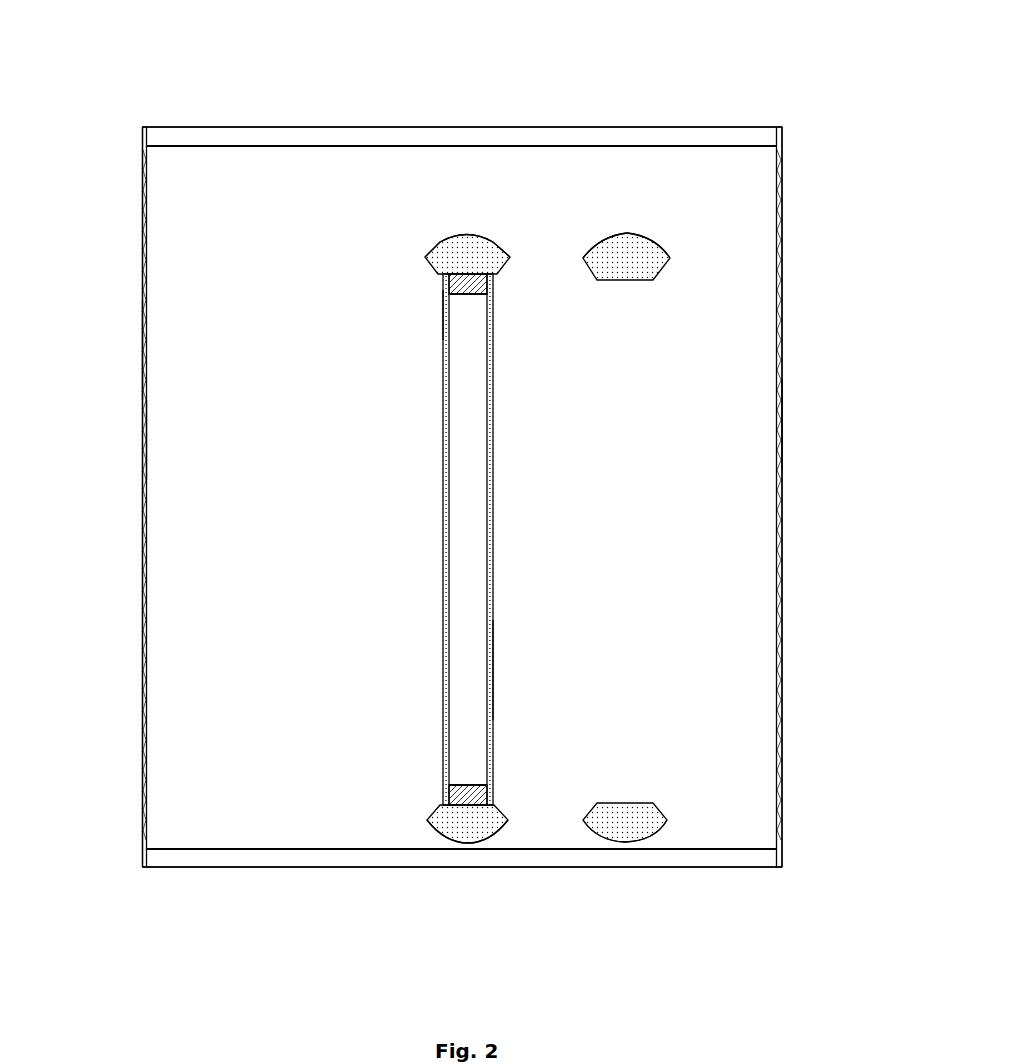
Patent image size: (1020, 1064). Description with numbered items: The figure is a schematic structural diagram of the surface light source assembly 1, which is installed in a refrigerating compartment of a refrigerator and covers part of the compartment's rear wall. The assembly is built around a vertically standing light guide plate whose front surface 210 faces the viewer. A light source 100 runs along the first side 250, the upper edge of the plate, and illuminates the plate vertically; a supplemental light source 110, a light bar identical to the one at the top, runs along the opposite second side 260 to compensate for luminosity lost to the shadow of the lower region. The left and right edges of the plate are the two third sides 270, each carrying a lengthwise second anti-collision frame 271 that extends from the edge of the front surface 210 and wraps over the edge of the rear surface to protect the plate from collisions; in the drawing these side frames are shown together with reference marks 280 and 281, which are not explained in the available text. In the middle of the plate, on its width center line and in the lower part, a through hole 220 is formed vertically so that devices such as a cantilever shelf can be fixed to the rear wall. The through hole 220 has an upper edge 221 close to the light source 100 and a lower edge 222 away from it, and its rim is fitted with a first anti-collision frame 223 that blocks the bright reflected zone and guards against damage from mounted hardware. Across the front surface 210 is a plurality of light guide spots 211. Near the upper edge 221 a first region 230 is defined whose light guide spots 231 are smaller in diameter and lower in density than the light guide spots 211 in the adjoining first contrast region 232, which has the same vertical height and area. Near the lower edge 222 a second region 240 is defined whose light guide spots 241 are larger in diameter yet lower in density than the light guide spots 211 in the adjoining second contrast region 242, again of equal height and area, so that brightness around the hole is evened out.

The surface light source assembly 1 is at (515, 61).
The light source 100 is at (520, 137).
The supplemental light source 110 is at (492, 858).
The front surface 210 is at (185, 313).
The light guide spots 211 is at (632, 258).
The through hole 220 is at (471, 510).
The upper edge 221 is at (460, 293).
The lower edge 222 is at (490, 672).
The first anti-collision frame 223 is at (447, 298).
The first region 230 is at (458, 232).
The light guide spots 231 is at (455, 256).
The first contrast region 232 is at (625, 233).
The second region 240 is at (432, 826).
The light guide spots 241 is at (462, 823).
The second contrast region 242 is at (648, 840).
The first side 250 is at (640, 146).
The second side 260 is at (558, 850).
The third sides 270 is at (782, 458).
The second anti-collision frame 271 is at (782, 430).
The left wall outer layer 280 is at (142, 383).
The left wall inner layer 281 is at (142, 445).